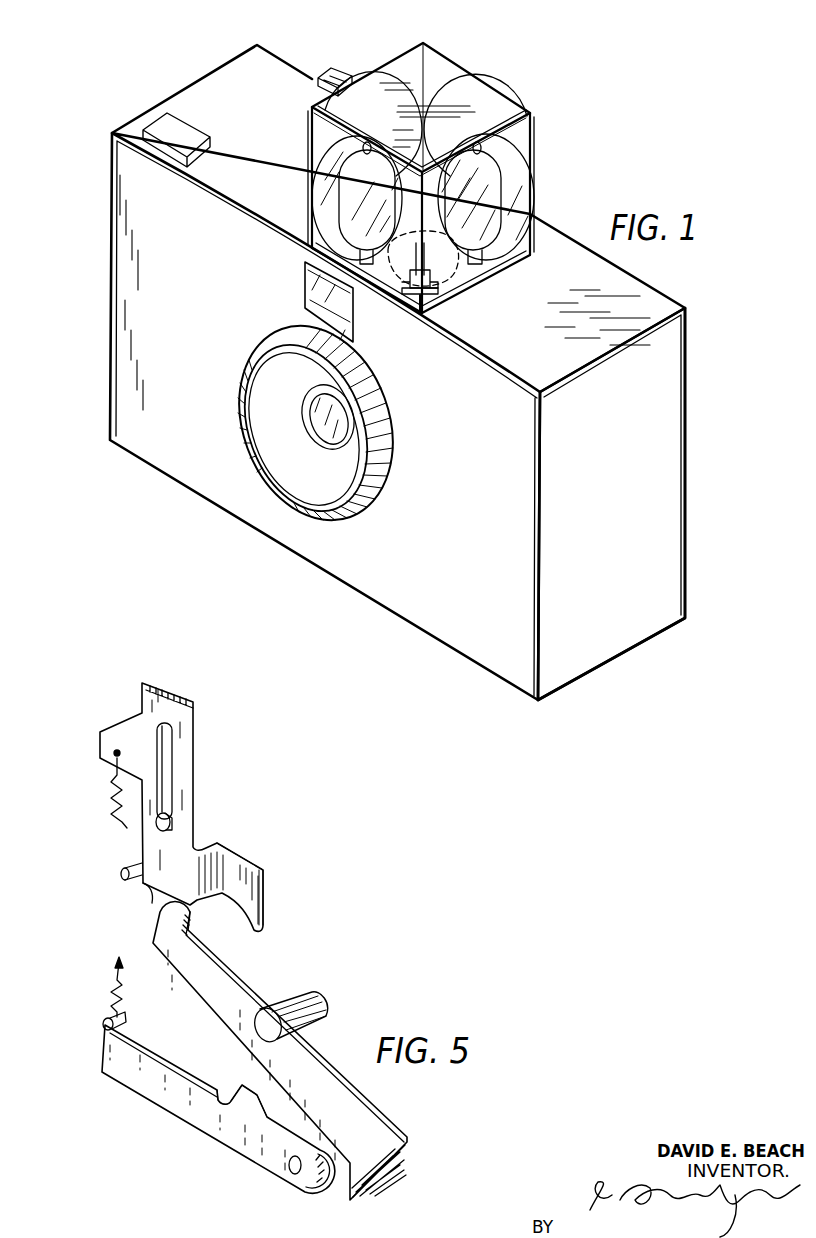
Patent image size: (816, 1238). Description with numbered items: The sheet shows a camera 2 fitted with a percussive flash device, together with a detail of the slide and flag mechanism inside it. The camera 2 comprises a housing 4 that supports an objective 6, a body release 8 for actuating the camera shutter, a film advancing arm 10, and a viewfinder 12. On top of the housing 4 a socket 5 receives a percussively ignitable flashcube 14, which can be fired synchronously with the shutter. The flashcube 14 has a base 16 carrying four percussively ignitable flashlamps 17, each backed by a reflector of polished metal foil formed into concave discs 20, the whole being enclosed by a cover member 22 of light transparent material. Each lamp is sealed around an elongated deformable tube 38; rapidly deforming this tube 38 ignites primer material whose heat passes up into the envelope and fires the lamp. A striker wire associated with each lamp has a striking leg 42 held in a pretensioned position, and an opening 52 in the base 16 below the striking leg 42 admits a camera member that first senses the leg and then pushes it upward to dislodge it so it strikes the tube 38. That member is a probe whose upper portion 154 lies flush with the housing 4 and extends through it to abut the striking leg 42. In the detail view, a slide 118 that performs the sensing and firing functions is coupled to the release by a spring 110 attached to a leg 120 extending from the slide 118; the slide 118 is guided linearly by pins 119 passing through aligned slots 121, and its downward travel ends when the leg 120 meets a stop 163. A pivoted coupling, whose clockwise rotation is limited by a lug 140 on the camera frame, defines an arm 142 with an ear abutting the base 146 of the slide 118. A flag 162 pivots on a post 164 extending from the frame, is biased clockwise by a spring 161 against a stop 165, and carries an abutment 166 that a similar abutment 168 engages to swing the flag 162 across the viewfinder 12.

In FIG. 1, the camera 2 is at (397, 372).
In FIG. 1, the housing 4 is at (686, 423).
In FIG. 1, the socket 5 is at (383, 242).
In FIG. 1, the objective 6 is at (330, 447).
In FIG. 1, the body release 8 is at (170, 117).
In FIG. 1, the film advancing arm 10 is at (328, 70).
In FIG. 1, the viewfinder 12 is at (343, 330).
In FIG. 1, the flashcube 14 is at (514, 98).
In FIG. 1, the base 16 is at (527, 268).
In FIG. 1, the flashlamps 17 is at (488, 204).
In FIG. 1, the concave discs 20 is at (518, 168).
In FIG. 1, the cover member 22 is at (536, 134).
In FIG. 1, the tube 38 is at (391, 309).
In FIG. 1, the striking leg 42 is at (425, 268).
In FIG. 1, the opening 52 is at (452, 285).
In FIG. 1, the upper portion 154 is at (430, 294).
In FIG. 1, the flag 162 is at (303, 308).
In FIG. 5, the flag 162 is at (150, 1080).
In FIG. 5, the spring 110 is at (109, 798).
In FIG. 5, the slide 118 is at (143, 700).
In FIG. 5, the pins 119 is at (172, 832).
In FIG. 5, the leg 120 is at (104, 744).
In FIG. 5, the slots 121 is at (170, 745).
In FIG. 5, the lug 140 is at (327, 1020).
In FIG. 5, the arm 142 is at (222, 992).
In FIG. 5, the base 146 is at (150, 892).
In FIG. 5, the spring 161 is at (103, 978).
In FIG. 5, the stop 163 is at (130, 868).
In FIG. 5, the post 164 is at (290, 1170).
In FIG. 5, the stop 165 is at (104, 1022).
In FIG. 5, the abutment 166 is at (222, 1091).
In FIG. 5, the abutment 168 is at (253, 928).